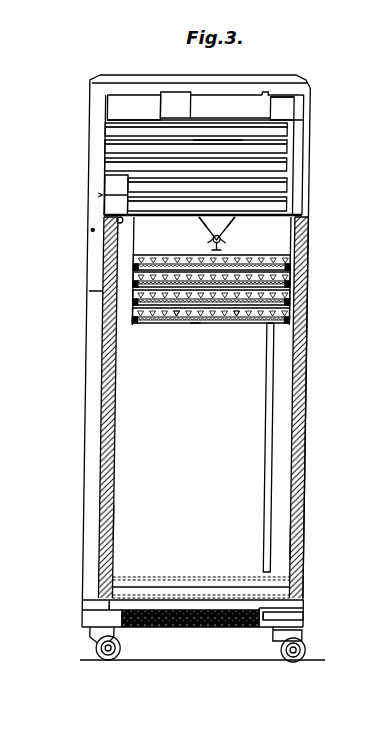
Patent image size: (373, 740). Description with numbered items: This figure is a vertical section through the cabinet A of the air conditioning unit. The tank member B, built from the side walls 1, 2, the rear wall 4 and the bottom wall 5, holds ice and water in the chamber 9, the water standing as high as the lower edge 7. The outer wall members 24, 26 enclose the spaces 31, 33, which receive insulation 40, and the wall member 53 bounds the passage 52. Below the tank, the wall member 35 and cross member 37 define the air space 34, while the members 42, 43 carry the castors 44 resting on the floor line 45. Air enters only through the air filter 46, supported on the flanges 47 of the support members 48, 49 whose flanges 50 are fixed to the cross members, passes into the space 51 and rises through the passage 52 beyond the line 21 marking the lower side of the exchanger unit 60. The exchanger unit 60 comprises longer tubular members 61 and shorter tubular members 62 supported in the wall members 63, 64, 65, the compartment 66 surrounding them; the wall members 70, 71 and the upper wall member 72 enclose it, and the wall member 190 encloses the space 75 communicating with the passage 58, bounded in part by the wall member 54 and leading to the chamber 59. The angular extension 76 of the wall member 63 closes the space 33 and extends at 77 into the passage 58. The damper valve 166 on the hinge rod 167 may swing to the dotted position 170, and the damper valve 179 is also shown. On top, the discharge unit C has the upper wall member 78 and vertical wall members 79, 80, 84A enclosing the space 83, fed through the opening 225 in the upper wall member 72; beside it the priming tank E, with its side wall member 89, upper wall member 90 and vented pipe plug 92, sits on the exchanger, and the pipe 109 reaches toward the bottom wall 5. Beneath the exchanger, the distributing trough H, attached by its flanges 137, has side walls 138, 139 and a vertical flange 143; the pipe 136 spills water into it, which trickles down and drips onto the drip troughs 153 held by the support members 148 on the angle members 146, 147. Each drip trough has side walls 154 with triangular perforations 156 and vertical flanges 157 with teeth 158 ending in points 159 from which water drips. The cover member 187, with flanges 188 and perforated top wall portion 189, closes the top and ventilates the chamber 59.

The side wall 1 is at (305, 360).
The side wall 2 is at (101, 384).
The rear wall 4 is at (88, 291).
The bottom wall 5 is at (215, 578).
The lower edge 7 is at (315, 122).
The chamber 9 is at (296, 497).
The line 21 is at (289, 210).
The outer wall member 24 is at (133, 274).
The outer wall member 26 is at (300, 259).
The space or chamber 31 is at (304, 342).
The space or chamber 33 is at (103, 452).
The space or chamber 34 is at (150, 585).
The wall member 35 is at (272, 598).
The cross member 37 is at (95, 600).
The insulating material 40 is at (112, 525).
The member 42 is at (300, 616).
The member 43 is at (95, 610).
The castors 44 is at (85, 648).
The floor line 45 is at (320, 656).
The air filter 46 is at (180, 628).
The flanges 47 is at (150, 627).
The support member 48 is at (222, 618).
The support member 49 is at (126, 612).
The flanges 50 is at (126, 612).
The space or chamber 51 is at (162, 610).
The passage or chamber 52 is at (92, 545).
The wall member 53 is at (100, 482).
The wall member 54 is at (133, 286).
The passage or chamber 58 is at (133, 264).
The chamber 59 is at (310, 113).
The exchanger unit 60 is at (294, 161).
The tubular members 61 is at (106, 158).
The tubular members 62 is at (290, 178).
The wall member 63 is at (108, 118).
The wall member 64 is at (294, 128).
The wall member 65 is at (144, 196).
The compartment 66 is at (214, 140).
The wall member 70 is at (300, 208).
The wall member 71 is at (304, 140).
The upper wall member 72 is at (305, 110).
The space or chamber 75 is at (110, 217).
The angular extension 76 is at (125, 231).
The extension 77 is at (122, 253).
The upper wall member 78 is at (243, 95).
The vertical side wall member 79 is at (131, 97).
The vertical side wall member 80 is at (232, 97).
The space or chamber 83 is at (108, 108).
The vertical wall member 84A is at (108, 108).
The vertical side wall member 89 is at (296, 104).
The upper wall member 90 is at (283, 100).
The vented pipe plug 92 is at (266, 94).
The pipe 109 is at (262, 470).
The pipe 136 is at (217, 225).
The flanges 137 is at (196, 217).
The side wall 138 is at (227, 228).
The side wall 139 is at (204, 226).
The vertical flange 143 is at (212, 242).
The angle member 146 is at (134, 320).
The angle member 147 is at (266, 338).
The support members 148 is at (298, 322).
The drip troughs 153 is at (312, 237).
The side wall 154 is at (182, 322).
The triangular perforations 156 is at (300, 276).
The vertical flanges 157 is at (172, 322).
The triangular serrations or teeth 158 is at (233, 322).
The points 159 is at (196, 326).
The damper valve 166 is at (100, 208).
The hinge rod 167 is at (106, 185).
The damper valve position 170 is at (100, 195).
The damper valve 179 is at (93, 233).
The cover member 187 is at (98, 82).
The flanges 188 is at (98, 88).
The top wall portion 189 is at (162, 75).
The wall member 190 is at (131, 171).
The opening 225 is at (130, 114).
The cabinet A is at (312, 214).
The tank member B is at (305, 381).
The discharge unit C is at (108, 107).
The priming tank E is at (278, 97).
The distributing trough H is at (226, 232).